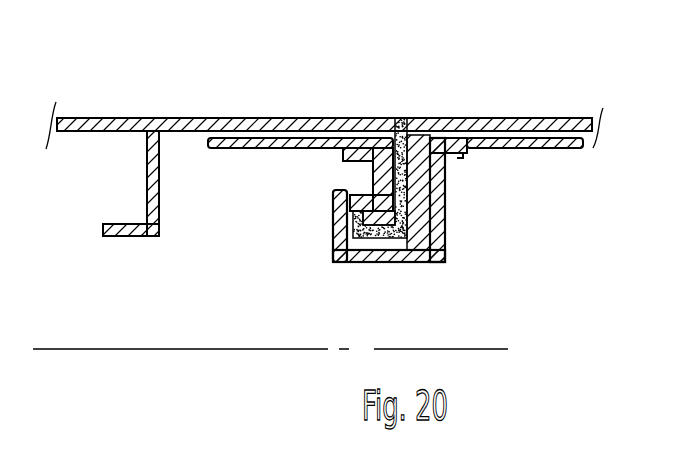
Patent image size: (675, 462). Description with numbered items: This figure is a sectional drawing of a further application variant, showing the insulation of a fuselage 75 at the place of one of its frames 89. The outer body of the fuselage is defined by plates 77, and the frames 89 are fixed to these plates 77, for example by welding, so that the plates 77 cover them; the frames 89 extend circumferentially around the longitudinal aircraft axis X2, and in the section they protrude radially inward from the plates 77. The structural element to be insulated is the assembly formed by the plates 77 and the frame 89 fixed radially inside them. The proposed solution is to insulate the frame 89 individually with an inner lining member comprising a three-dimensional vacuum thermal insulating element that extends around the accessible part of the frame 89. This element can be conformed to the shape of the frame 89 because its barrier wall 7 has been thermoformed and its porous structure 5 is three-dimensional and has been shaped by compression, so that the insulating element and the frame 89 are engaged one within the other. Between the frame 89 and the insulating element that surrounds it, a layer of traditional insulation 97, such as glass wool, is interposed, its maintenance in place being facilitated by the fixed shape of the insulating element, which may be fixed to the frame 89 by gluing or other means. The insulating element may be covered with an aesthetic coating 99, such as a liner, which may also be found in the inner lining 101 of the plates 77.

The fuselage 75 is at (525, 108).
The plates 77 is at (262, 118).
The inner lining 101 is at (548, 147).
The frames 89 is at (148, 222).
The layer of traditional insulation 97 is at (447, 237).
The aesthetic coating 99 is at (427, 260).
The barrier wall 7 is at (445, 170).
The porous structure 5 is at (407, 254).
The longitudinal axis X2 is at (463, 347).